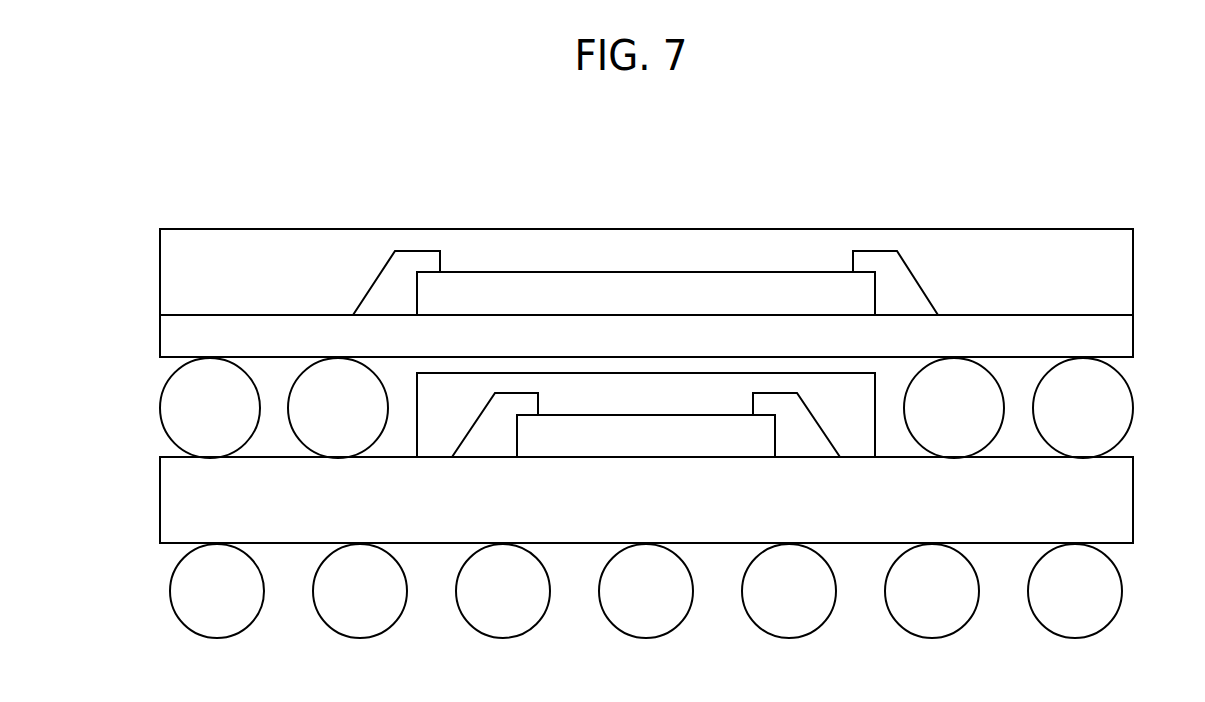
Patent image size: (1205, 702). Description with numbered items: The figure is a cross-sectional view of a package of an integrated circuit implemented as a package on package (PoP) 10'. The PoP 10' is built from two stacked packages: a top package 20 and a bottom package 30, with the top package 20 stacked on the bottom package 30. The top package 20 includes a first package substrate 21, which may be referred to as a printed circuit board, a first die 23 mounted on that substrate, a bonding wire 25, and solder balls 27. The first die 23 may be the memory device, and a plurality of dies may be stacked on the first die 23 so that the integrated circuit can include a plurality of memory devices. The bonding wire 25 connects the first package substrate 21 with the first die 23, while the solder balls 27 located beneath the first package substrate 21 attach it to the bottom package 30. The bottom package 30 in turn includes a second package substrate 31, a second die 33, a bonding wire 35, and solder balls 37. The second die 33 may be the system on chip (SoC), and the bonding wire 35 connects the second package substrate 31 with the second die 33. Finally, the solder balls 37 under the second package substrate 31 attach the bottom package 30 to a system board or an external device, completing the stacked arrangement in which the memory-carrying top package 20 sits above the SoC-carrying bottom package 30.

The package on package 10' is at (647, 387).
The top package 20 is at (134, 296).
The first package substrate 21 is at (1125, 351).
The first die 23 is at (868, 309).
The bonding wire 25 is at (918, 280).
The solder balls 27 is at (1115, 408).
The bottom package 30 is at (134, 511).
The second package substrate 31 is at (1125, 538).
The second die 33 is at (767, 452).
The bonding wire 35 is at (820, 422).
The solder balls 37 is at (1105, 590).